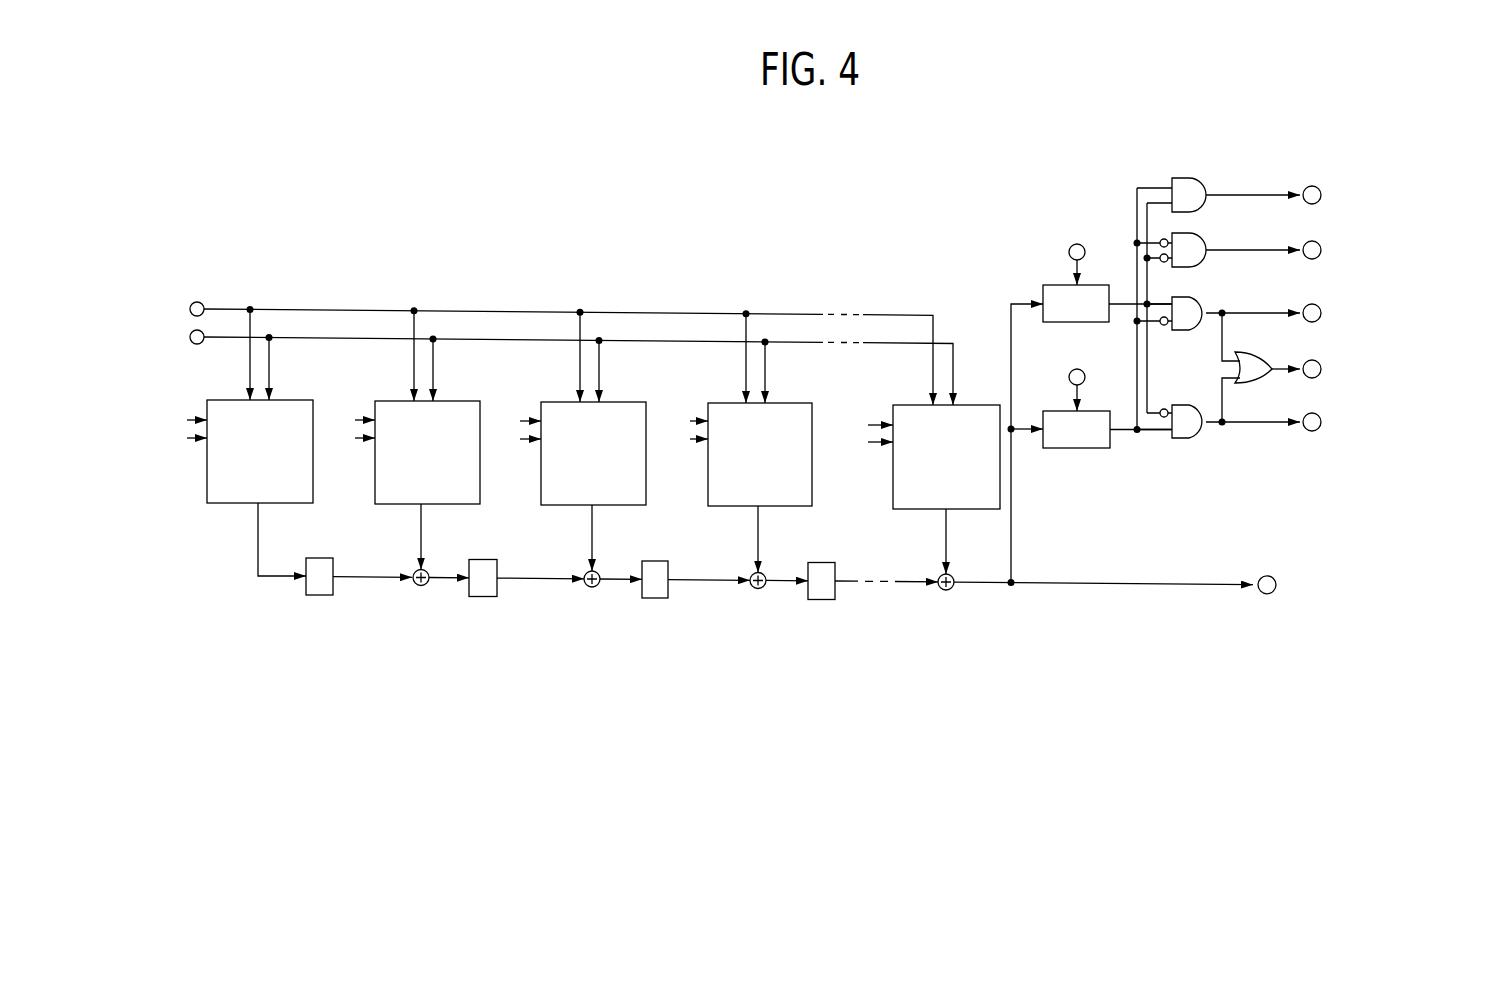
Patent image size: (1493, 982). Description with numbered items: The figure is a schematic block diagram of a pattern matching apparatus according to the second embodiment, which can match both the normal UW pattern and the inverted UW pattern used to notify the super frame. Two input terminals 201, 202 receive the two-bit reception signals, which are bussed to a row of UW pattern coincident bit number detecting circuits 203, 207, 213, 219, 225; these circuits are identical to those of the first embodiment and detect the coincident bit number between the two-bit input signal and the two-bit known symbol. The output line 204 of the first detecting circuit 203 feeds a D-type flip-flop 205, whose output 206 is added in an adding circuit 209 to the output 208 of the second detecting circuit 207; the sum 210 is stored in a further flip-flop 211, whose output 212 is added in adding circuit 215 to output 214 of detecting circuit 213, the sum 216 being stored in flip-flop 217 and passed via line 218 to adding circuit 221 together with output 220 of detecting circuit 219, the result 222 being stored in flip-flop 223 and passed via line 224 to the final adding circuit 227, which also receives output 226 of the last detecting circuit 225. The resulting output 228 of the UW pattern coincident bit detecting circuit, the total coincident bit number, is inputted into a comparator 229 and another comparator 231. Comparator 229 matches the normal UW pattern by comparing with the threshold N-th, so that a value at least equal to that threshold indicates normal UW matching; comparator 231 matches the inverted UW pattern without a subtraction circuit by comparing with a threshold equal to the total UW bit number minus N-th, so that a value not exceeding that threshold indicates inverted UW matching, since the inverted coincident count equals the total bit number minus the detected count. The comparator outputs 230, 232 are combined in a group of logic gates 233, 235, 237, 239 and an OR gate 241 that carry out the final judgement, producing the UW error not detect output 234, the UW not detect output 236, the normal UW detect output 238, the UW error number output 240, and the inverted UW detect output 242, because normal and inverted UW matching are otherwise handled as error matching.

The input terminal for in-phase signal xi(iT) 201 is at (224, 307).
The input terminal for quadrature signal Xq(iT) 202 is at (292, 337).
The UW pattern coincident bit number detecting circuit 203 is at (232, 398).
The output line of detection circuit 203 204 is at (258, 547).
The delay circuit 205 is at (315, 597).
The delay circuit output line 206 is at (360, 580).
The UW pattern coincident bit number detecting circuit 207 is at (396, 399).
The output line of detection circuit 207 208 is at (421, 530).
The adder 209 is at (412, 584).
The adder output line 210 is at (440, 583).
The delay circuit 211 is at (480, 598).
The delay circuit output line 212 is at (532, 583).
The UW pattern coincident bit number detecting circuit 213 is at (573, 400).
The output line of detection circuit 213 214 is at (592, 532).
The adder 215 is at (582, 585).
The adder output line 216 is at (615, 585).
The delay circuit 217 is at (653, 600).
The delay circuit output line 218 is at (708, 584).
The UW pattern coincident bit number detecting circuit 219 is at (732, 401).
The output line of detection circuit 219 220 is at (758, 533).
The adder 221 is at (748, 586).
The adder output line 222 is at (775, 586).
The delay circuit 223 is at (820, 601).
The delay circuit output line 224 is at (848, 587).
The UW pattern coincident bit number detecting circuit 225 is at (920, 404).
The output line of detection circuit 225 226 is at (946, 538).
The adder producing y(iT) 227 is at (938, 588).
The output of the UW pattern coincident bit detecting circuit 228 is at (1053, 588).
The comparator 229 is at (1062, 325).
The comparator 229 output line 230 is at (1122, 307).
The comparator 231 is at (1063, 450).
The comparator 231 output line 232 is at (1130, 433).
The AND gate 233 is at (1183, 176).
The UW error not detect output 234 is at (1238, 192).
The AND gate with inverted inputs 235 is at (1195, 267).
The UW not detect output 236 is at (1242, 248).
The AND gate 237 is at (1187, 331).
The normal UW detect output 238 is at (1225, 306).
The AND gate 239 is at (1192, 440).
The UW error number output 240 is at (1225, 418).
The OR gate 241 is at (1247, 352).
The inverted UW detect output 242 is at (1278, 365).